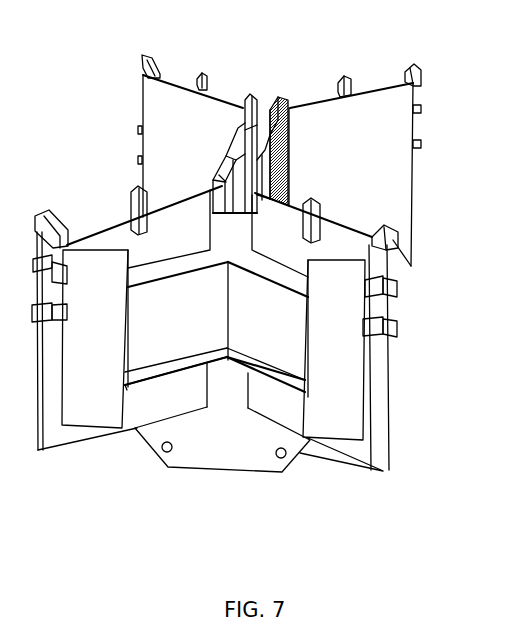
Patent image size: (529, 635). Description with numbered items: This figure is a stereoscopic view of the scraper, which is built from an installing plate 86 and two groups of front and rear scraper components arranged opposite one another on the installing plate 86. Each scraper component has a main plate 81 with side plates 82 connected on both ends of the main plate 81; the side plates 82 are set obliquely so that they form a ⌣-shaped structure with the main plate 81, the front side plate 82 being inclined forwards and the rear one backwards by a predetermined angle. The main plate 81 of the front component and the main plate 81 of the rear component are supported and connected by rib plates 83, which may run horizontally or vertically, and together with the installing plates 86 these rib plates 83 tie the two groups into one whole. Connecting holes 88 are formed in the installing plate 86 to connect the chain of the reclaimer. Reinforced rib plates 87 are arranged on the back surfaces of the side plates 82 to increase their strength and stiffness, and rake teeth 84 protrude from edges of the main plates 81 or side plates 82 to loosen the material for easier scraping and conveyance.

The main plate 81 is at (291, 181).
The side plate 82 is at (395, 130).
The rib plate 83 is at (247, 173).
The rake tooth 84 is at (253, 96).
The installing plate 86 is at (209, 487).
The reinforced rib plate 87 is at (150, 272).
The connecting hole 88 is at (155, 458).